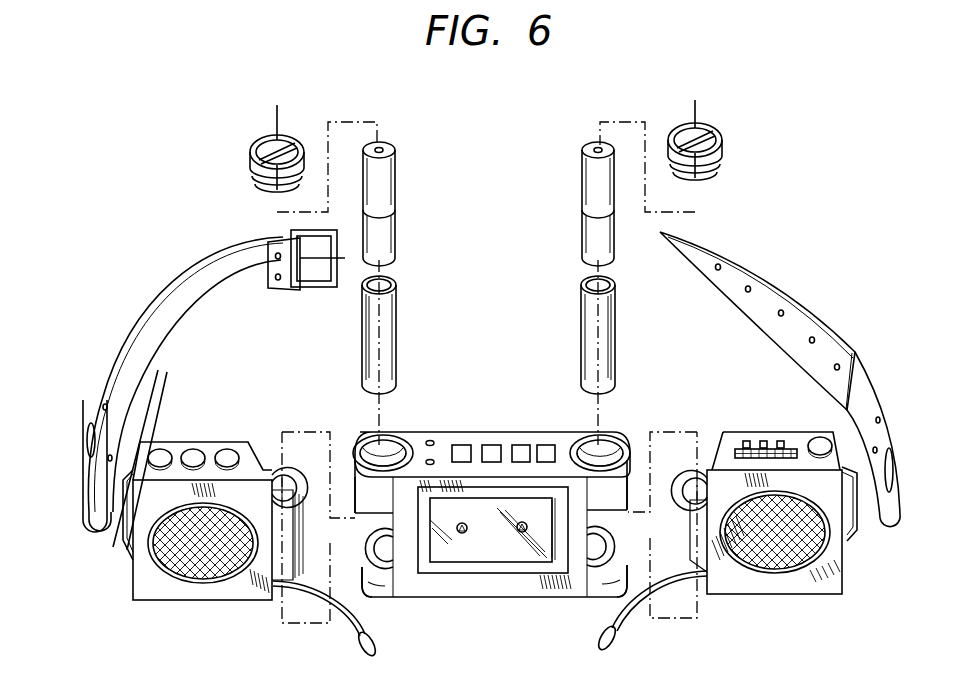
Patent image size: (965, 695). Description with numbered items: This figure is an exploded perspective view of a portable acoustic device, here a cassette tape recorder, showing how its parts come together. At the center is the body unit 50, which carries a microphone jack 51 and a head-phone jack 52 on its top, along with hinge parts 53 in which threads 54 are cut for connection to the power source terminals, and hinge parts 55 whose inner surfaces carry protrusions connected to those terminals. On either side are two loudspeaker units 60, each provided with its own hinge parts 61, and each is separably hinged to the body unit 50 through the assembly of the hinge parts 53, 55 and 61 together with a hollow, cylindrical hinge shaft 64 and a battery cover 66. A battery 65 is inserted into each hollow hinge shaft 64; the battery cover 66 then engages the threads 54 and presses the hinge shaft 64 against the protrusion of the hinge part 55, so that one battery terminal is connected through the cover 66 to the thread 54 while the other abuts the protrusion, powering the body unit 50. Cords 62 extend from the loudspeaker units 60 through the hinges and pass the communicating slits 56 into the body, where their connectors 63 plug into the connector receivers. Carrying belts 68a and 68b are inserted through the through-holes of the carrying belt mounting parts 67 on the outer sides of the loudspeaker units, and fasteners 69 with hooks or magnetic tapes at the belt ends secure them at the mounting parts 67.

The body unit 50 is at (477, 600).
The microphone jack 51 is at (436, 460).
The head-phone jack 52 is at (430, 440).
The hinge parts 53 is at (355, 478).
The threads 54 is at (360, 480).
The hinge parts 55 is at (368, 595).
The communicating slits 56 is at (385, 586).
The loudspeaker units 60 is at (190, 600).
The hinge parts 61 is at (278, 470).
The cords 62 is at (318, 586).
The connectors 63 is at (358, 650).
The hollow cylindrical hinge shafts 64 is at (399, 338).
The batteries 65 is at (397, 222).
The battery covers 66 is at (250, 157).
The carrying belt mounting parts 67 is at (123, 540).
The carrying belt 68a is at (134, 340).
The carrying belt 68b is at (880, 366).
The fasteners 69 is at (130, 440).